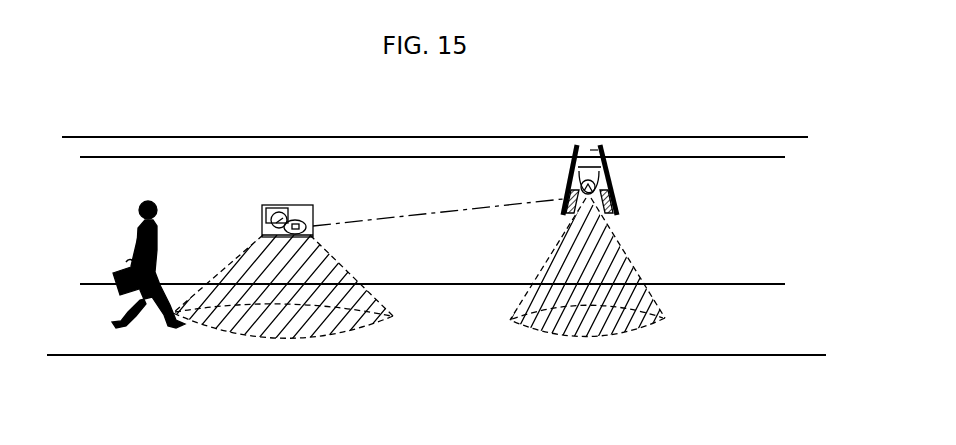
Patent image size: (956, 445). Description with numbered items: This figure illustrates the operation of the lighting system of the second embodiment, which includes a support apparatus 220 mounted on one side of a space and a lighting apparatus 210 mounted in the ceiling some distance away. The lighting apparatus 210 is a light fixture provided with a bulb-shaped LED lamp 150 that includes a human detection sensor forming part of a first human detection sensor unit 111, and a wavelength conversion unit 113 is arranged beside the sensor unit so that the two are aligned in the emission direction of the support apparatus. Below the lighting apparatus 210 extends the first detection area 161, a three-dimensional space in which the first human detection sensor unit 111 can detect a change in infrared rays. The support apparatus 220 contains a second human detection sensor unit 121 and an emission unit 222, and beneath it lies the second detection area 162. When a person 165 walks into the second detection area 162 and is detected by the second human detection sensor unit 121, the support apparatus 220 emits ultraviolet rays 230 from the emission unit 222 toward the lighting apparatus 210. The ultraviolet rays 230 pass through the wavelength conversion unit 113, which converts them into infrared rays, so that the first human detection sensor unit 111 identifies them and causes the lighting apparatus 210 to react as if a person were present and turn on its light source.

The first human detection sensor unit 111 is at (612, 182).
The wavelength conversion unit 113 is at (567, 215).
The second human detection sensor unit 121 is at (270, 220).
The bulb-shaped LED lamp 150 is at (588, 152).
The first detection area 161 is at (623, 272).
The second detection area 162 is at (247, 325).
The person 165 is at (135, 233).
The lighting apparatus 210 is at (626, 177).
The support apparatus 220 is at (308, 191).
The emission unit 222 is at (304, 223).
The ultraviolet rays 230 is at (423, 217).